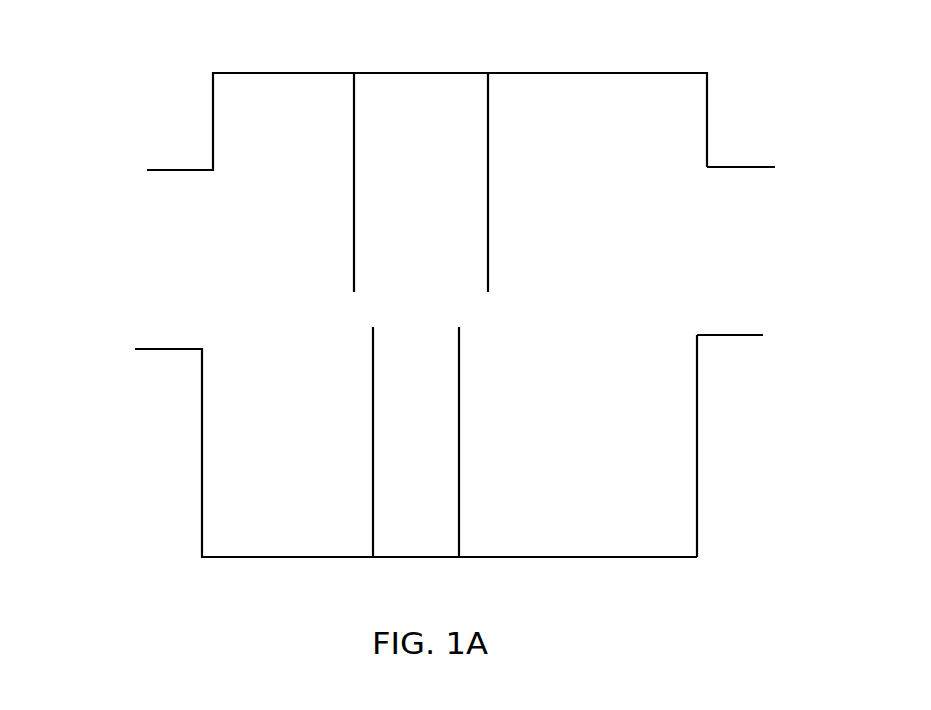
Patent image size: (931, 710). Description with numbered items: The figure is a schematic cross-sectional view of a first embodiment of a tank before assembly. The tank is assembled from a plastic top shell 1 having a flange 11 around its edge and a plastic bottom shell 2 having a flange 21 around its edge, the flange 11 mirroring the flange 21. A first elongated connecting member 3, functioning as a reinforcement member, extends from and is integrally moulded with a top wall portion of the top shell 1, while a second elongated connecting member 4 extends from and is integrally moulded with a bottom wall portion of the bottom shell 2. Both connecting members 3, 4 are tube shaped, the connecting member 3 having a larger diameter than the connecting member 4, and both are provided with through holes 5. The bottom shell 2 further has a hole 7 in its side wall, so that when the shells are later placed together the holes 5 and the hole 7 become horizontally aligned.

The top shell 1 is at (173, 185).
The bottom shell 2 is at (188, 372).
The first elongated connecting member 3 is at (477, 143).
The second elongated connecting member 4 is at (459, 502).
The through holes 5 is at (353, 227).
The hole 7 is at (699, 466).
The flange 11 is at (730, 163).
The flange 21 is at (733, 338).